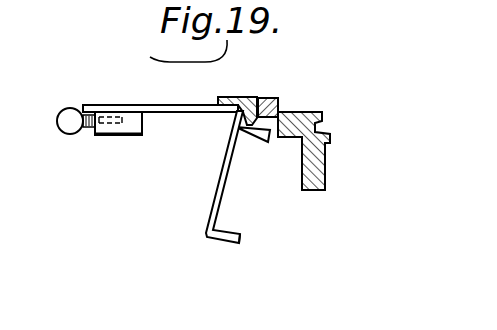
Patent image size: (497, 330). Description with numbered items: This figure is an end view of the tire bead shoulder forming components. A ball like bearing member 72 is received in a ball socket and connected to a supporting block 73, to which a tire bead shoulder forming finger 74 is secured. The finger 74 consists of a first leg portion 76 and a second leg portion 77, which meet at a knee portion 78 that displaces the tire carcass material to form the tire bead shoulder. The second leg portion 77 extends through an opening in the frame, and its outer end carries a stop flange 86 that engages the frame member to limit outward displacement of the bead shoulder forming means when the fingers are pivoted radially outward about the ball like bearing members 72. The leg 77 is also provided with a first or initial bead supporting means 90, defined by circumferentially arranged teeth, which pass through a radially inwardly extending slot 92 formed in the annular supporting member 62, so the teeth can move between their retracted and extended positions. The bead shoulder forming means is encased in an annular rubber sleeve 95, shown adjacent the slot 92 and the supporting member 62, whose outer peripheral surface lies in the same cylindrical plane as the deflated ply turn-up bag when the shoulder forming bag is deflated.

The annular supporting member 62 is at (317, 168).
The ball like bearing member 72 is at (68, 131).
The supporting block 73 is at (133, 132).
The tire bead shoulder forming finger 74 is at (159, 100).
The first leg portion 76 is at (190, 113).
The second leg portion 77 is at (216, 197).
The knee portion 78 is at (236, 115).
The stop flange 86 is at (241, 240).
The first or initial bead supporting means 90 is at (257, 140).
The radially inwardly extending slot 92 is at (270, 97).
The annular rubber sleeve 95 is at (230, 97).